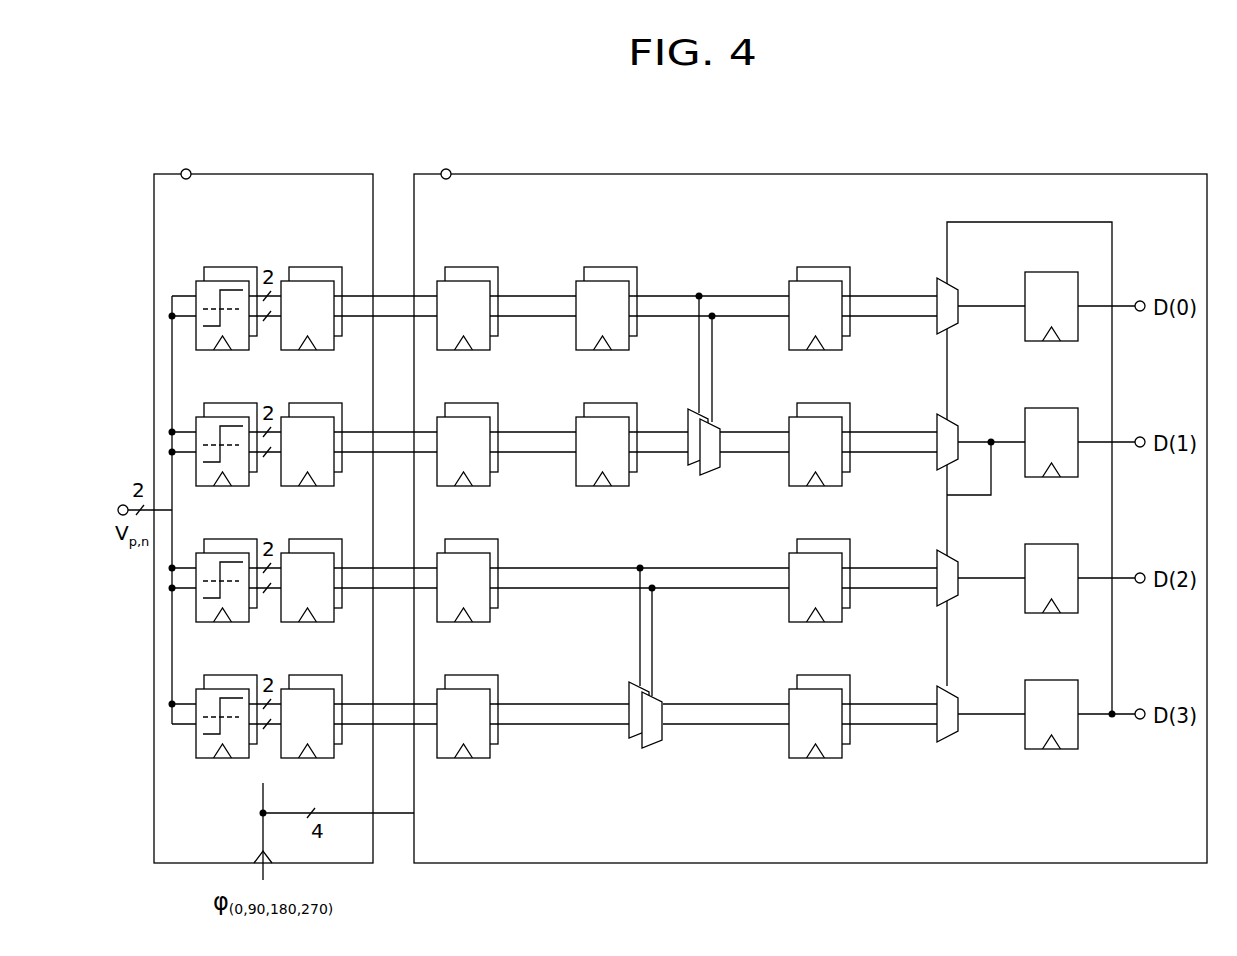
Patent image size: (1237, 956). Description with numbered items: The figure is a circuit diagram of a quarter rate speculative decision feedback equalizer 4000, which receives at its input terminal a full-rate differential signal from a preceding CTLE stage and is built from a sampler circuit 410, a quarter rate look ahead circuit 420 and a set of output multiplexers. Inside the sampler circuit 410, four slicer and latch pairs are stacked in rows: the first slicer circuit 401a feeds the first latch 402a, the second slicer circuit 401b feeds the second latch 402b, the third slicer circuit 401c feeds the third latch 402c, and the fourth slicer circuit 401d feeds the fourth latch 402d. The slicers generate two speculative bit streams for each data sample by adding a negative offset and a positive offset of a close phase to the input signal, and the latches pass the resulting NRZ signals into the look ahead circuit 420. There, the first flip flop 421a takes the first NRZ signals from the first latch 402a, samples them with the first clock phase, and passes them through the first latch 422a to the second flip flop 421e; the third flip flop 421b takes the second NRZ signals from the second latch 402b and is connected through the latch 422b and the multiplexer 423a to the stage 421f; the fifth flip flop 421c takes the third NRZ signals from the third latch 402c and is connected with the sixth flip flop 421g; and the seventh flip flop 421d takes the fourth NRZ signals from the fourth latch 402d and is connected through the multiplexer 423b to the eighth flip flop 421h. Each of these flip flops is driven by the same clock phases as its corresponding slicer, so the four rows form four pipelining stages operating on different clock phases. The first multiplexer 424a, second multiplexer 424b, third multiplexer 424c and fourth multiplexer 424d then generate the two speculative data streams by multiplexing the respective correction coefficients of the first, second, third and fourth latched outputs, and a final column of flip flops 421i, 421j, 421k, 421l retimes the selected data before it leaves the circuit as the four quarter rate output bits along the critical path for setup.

The quarter rate speculative decision feedback equalizer 4000 is at (1122, 140).
The sampler circuit 410 is at (313, 174).
The quarter rate look ahead circuit 420 is at (1143, 174).
The first slicer circuit 401a is at (232, 266).
The second slicer circuit 401b is at (232, 402).
The third slicer circuit 401c is at (232, 538).
The fourth slicer circuit 401d is at (232, 674).
The first latch 402a is at (317, 266).
The second latch 402b is at (317, 402).
The third latch 402c is at (317, 538).
The fourth latch 402d is at (317, 674).
The first flip flop 421a is at (472, 266).
The third flip flop 421b is at (472, 402).
The fifth flip flop 421c is at (472, 538).
The seventh flip flop 421d is at (472, 674).
The second flip flop 421e is at (824, 266).
The second latch 421f is at (824, 402).
The sixth flip flop 421g is at (824, 538).
The eighth flip flop 421h is at (824, 674).
The flip-flop 421i is at (1065, 272).
The flip-flop 421j is at (1065, 408).
The flip-flop 421k is at (1065, 544).
The flip-flop 421l is at (1065, 680).
The first latch 422a is at (611, 266).
The latch 422b is at (611, 402).
The multiplexer 423a is at (717, 423).
The multiplexer 423b is at (655, 695).
The first multiplexer 424a is at (948, 283).
The second multiplexer 424b is at (948, 419).
The third multiplexer 424c is at (948, 555).
The fourth multiplexer 424d is at (948, 691).